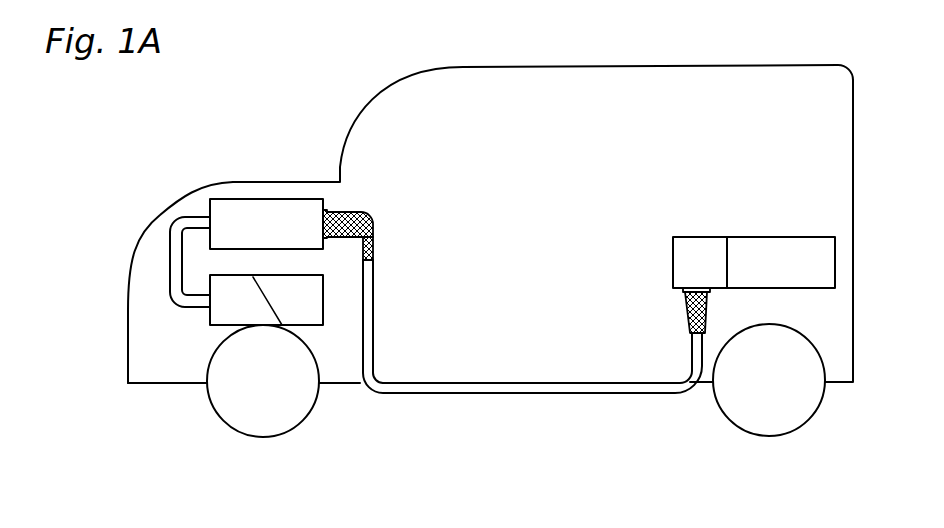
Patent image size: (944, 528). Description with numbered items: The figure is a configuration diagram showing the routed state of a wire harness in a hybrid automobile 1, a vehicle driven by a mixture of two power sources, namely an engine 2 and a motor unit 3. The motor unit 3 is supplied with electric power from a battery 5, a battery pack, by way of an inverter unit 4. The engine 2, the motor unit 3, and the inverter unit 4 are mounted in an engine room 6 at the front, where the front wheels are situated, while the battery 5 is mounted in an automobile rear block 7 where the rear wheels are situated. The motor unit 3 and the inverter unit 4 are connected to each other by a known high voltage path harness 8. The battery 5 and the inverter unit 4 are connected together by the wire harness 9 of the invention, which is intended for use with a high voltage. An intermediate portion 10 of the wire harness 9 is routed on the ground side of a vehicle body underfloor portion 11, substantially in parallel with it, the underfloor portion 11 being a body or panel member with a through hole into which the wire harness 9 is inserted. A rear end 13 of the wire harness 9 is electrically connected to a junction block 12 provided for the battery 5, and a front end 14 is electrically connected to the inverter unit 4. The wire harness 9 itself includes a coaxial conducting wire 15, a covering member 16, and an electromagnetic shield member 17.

The hybrid automobile 1 is at (327, 78).
The engine 2 is at (308, 310).
The motor unit 3 is at (223, 315).
The inverter unit 4 is at (240, 217).
The battery 5 is at (762, 250).
The engine room 6 is at (145, 342).
The automobile rear block 7 is at (840, 353).
The high voltage path harness 8 is at (170, 237).
The wire harness 9 is at (553, 394).
The intermediate portion 10 is at (445, 395).
The vehicle body underfloor portion 11 is at (490, 383).
The junction block 12 is at (690, 248).
The rear end 13 is at (685, 297).
The front end 14 is at (325, 210).
The coaxial conducting wire 15 is at (662, 395).
The covering member 16 is at (593, 395).
The electromagnetic shield member 17 is at (378, 225).